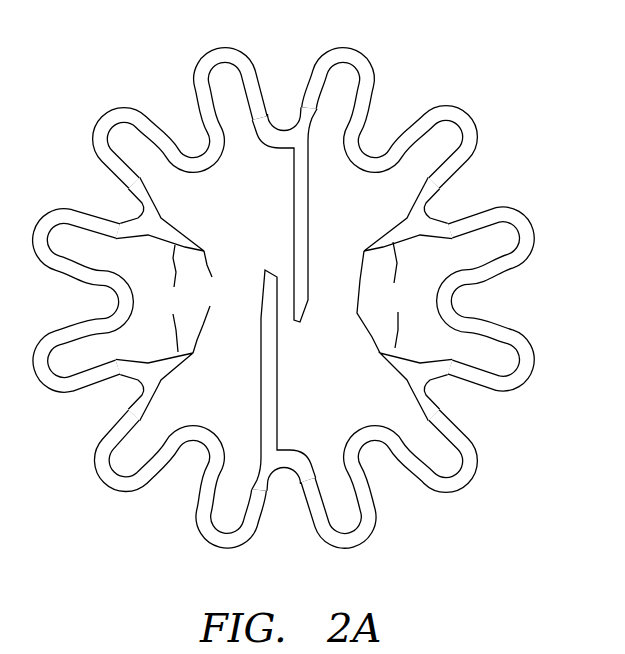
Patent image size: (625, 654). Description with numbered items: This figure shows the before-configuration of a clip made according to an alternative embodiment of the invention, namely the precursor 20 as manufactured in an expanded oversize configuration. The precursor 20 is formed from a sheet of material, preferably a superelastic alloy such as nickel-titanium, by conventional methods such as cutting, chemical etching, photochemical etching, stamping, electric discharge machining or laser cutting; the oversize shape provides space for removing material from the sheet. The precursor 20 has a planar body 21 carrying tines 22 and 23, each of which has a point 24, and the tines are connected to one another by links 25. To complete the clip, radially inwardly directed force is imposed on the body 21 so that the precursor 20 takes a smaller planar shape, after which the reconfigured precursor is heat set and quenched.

The precursor 20 is at (116, 58).
The planar body 21 is at (500, 270).
The tine 22 is at (297, 207).
The tine 23 is at (283, 297).
The point 24 is at (265, 270).
The link 25 is at (488, 460).